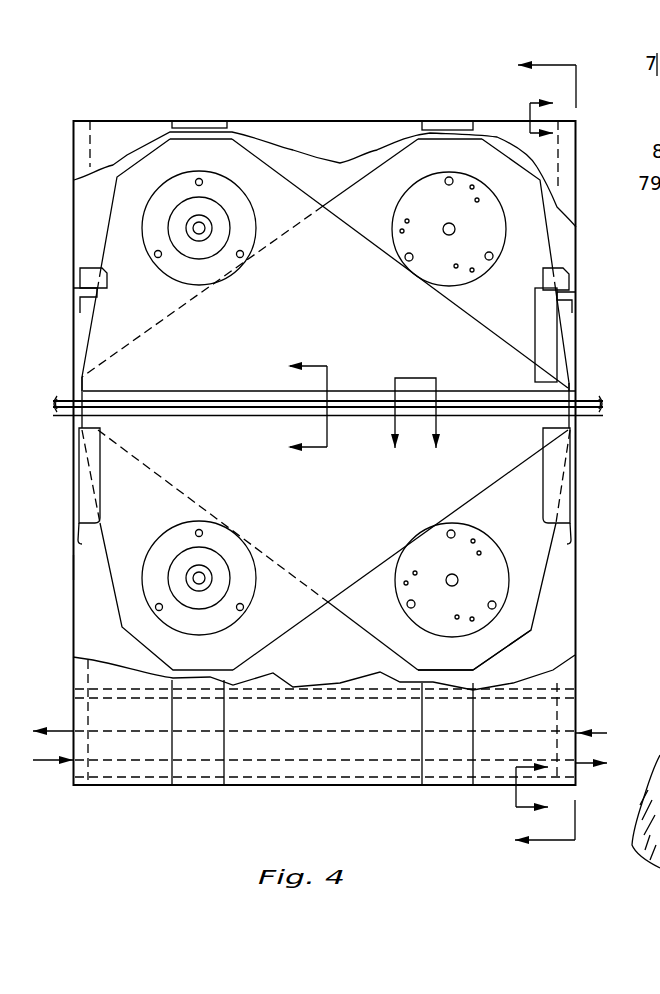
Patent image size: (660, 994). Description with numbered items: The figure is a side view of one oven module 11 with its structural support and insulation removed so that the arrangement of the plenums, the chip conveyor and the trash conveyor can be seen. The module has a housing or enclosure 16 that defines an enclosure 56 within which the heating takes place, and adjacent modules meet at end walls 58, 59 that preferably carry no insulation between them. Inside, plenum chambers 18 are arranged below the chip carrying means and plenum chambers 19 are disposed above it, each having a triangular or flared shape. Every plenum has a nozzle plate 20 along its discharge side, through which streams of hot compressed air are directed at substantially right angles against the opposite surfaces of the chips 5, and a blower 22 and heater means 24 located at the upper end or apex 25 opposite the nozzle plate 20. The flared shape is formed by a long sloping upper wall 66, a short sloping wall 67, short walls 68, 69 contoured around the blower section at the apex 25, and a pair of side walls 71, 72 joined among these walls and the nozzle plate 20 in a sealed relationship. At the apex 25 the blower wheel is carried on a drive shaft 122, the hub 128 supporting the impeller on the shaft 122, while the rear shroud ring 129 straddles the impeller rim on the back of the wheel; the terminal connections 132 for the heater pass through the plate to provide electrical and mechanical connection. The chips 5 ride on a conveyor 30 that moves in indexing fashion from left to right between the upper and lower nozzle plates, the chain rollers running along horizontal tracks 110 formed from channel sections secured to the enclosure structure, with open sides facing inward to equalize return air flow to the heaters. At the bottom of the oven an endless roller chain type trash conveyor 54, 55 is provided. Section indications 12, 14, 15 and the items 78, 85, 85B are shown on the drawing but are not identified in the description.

The chips 5 is at (544, 453).
The module 11 is at (421, 416).
The section line 12- 12 is at (305, 409).
The section line 14- 14 is at (544, 118).
The section line 15- 15 is at (532, 786).
The enclosure (housing) 16 is at (381, 121).
The plenum chamber 18 is at (297, 627).
The plenum chamber 19 is at (283, 188).
The nozzle plate 20 is at (158, 390).
The blower 22 is at (413, 200).
The heater means 24 is at (435, 390).
The upper end (apex) 25 is at (213, 170).
The conveyor 30 is at (75, 397).
The trash conveyor 54 is at (577, 728).
The trash conveyor 55 is at (342, 722).
The enclosure 56 is at (386, 152).
The end wall 58 is at (73, 262).
The end wall 59 is at (577, 333).
The long sloping upper wall 66 is at (363, 239).
The short sloping wall 67 is at (543, 243).
The short wall 68 is at (503, 650).
The short wall 69 is at (430, 670).
The side wall 71 is at (363, 321).
The side wall 72 is at (511, 320).
The lower bracket 78 is at (79, 522).
The lower fill boundary 85 is at (118, 128).
The side fill 85B is at (48, 567).
The horizontal track 110 is at (75, 412).
The drive shaft 122 is at (192, 234).
The hub 128 is at (212, 222).
The rear shroud ring 129 is at (218, 250).
The terminal connections 132 is at (478, 200).